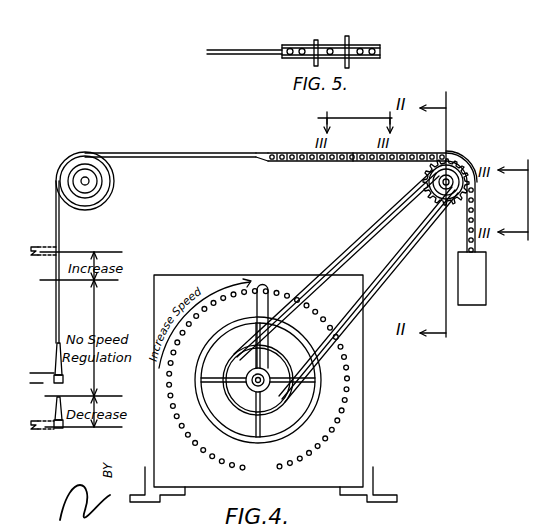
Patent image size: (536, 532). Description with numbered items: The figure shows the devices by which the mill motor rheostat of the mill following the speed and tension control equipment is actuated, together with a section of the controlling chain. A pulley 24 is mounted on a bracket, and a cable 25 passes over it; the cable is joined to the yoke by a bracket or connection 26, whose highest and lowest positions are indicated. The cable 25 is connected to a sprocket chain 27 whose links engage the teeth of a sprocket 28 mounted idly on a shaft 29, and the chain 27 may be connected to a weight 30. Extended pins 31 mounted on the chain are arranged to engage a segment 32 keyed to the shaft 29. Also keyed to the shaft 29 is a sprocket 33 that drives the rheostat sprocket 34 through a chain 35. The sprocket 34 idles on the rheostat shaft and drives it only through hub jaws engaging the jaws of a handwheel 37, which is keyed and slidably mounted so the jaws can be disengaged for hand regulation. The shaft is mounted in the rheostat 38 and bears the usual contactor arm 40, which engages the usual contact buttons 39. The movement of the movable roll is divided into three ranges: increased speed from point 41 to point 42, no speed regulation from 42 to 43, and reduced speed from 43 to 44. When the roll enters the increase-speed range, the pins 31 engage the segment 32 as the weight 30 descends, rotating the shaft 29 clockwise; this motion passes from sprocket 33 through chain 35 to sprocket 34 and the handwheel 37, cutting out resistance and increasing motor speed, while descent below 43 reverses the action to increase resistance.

In FIG. 4, the pulley 24 is at (114, 200).
In FIG. 4, the cable 25 is at (190, 158).
In FIG. 4, the bracket 26 is at (45, 258).
In FIG. 5, the sprocket chain 27 is at (330, 47).
In FIG. 4, the sprocket chain 27 is at (312, 162).
In FIG. 4, the sprocket 28 is at (437, 161).
In FIG. 4, the shaft 29 is at (441, 189).
In FIG. 4, the weight 30 is at (486, 290).
In FIG. 5, the extended pins 31 is at (350, 40).
In FIG. 4, the extended pins 31 is at (353, 162).
In FIG. 4, the segment 32 is at (469, 165).
In FIG. 4, the sprocket 33 is at (396, 192).
In FIG. 4, the rheostat sprocket 34 is at (265, 380).
In FIG. 4, the chain 35 is at (378, 292).
In FIG. 4, the handwheel 37 is at (294, 426).
In FIG. 4, the rheostat 38 is at (263, 388).
In FIG. 4, the contact buttons 39 is at (264, 379).
In FIG. 4, the contactor arm 40 is at (257, 311).
In FIG. 4, the point 41 is at (93, 254).
In FIG. 4, the point 42 is at (119, 282).
In FIG. 4, the point 43 is at (96, 398).
In FIG. 4, the point 44 is at (96, 433).